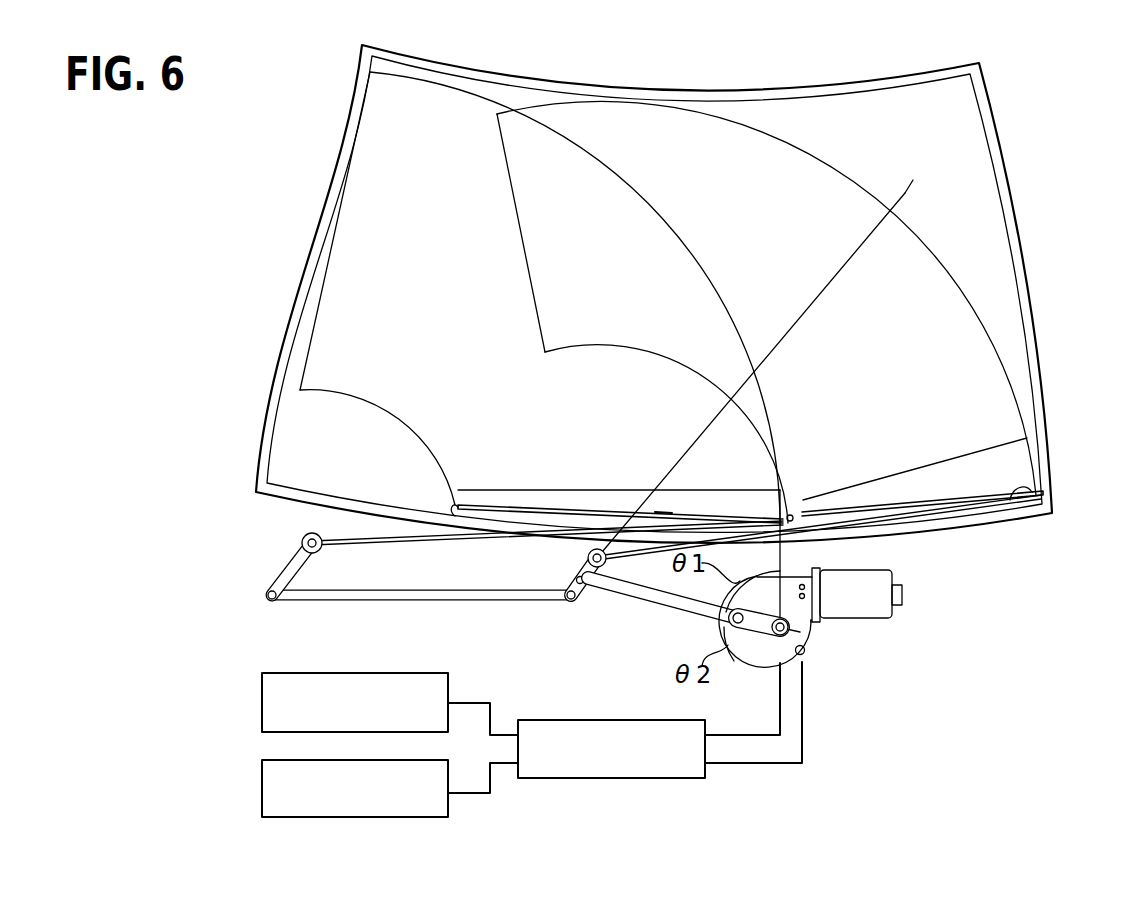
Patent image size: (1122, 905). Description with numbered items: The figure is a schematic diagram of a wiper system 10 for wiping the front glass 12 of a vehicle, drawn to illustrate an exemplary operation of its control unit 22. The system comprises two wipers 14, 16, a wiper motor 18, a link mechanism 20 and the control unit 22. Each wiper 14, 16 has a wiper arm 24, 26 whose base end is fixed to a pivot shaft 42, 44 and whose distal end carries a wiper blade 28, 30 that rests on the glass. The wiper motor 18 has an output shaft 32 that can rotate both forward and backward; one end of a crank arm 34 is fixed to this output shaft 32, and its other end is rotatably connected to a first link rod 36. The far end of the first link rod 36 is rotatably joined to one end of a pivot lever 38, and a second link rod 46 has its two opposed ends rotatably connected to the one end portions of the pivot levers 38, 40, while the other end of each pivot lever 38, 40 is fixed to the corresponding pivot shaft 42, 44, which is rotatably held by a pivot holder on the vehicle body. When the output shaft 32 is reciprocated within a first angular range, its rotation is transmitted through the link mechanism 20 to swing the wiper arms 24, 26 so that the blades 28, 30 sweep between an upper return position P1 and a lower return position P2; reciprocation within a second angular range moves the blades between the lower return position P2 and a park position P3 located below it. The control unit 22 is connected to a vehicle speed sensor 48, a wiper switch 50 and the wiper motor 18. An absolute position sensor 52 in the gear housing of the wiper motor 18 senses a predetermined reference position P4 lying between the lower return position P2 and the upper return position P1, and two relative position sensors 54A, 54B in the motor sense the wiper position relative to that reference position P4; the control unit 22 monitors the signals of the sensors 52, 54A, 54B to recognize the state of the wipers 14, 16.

The wiper system 10 is at (850, 776).
The front glass 12 is at (690, 90).
The wiper 14 is at (988, 494).
The wiper 16 is at (720, 514).
The wiper motor 18 is at (904, 596).
The link mechanism 20 is at (599, 632).
The control unit 22 is at (630, 781).
The wiper arm 24 is at (796, 510).
The wiper arm 26 is at (356, 530).
The wiper blade 28 is at (935, 503).
The wiper blade 30 is at (663, 516).
The output shaft 32 is at (806, 640).
The crank arm 34 is at (762, 662).
The first link rod 36 is at (646, 603).
The pivot lever 38 is at (573, 580).
The pivot lever 40 is at (283, 563).
The pivot shaft 42 is at (587, 558).
The pivot shaft 44 is at (301, 540).
The second link rod 46 is at (430, 602).
The vehicle speed sensor 48 is at (262, 703).
The wiper switch 50 is at (262, 791).
The absolute position sensor 52 is at (805, 654).
The relative position sensor 54A is at (805, 584).
The relative position sensor 54B is at (806, 600).
The upper return position P1 is at (330, 244).
The lower return position P2 is at (600, 496).
The park position P3 is at (452, 535).
The reference position P4 is at (905, 193).